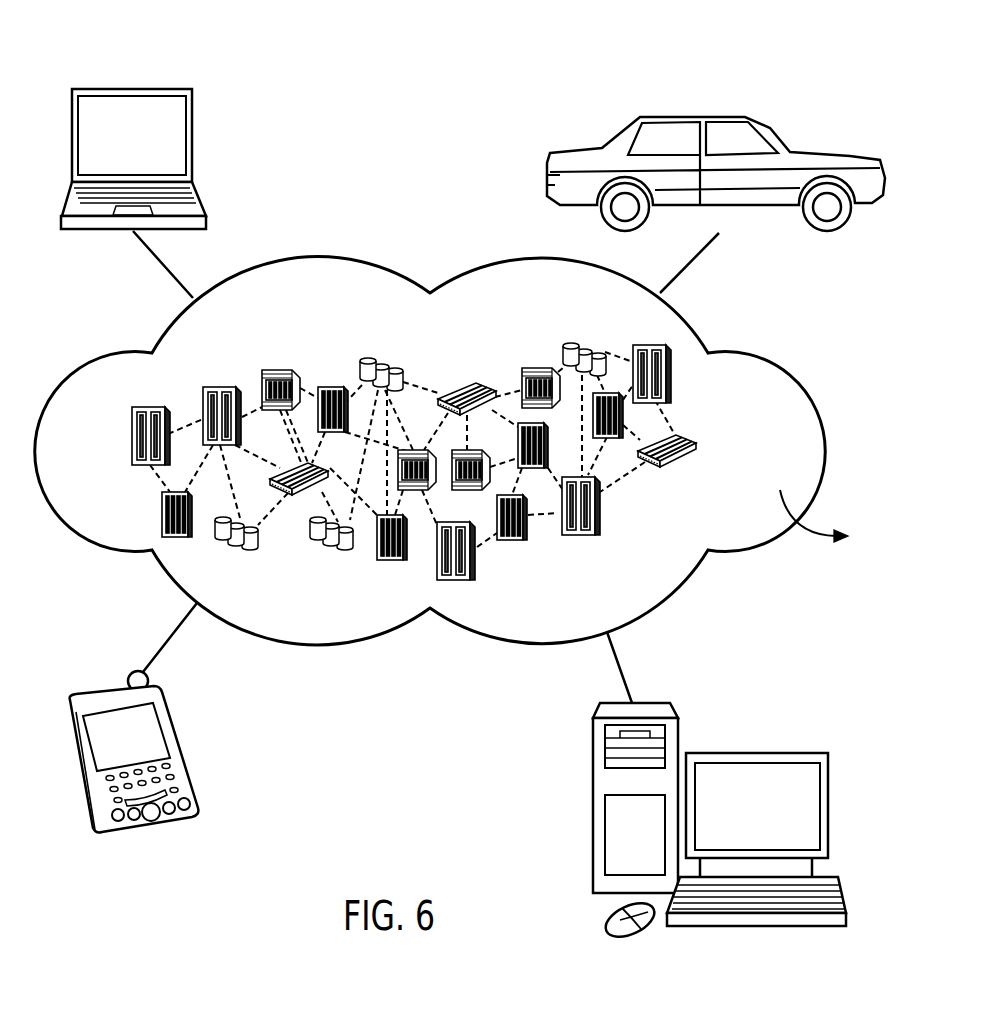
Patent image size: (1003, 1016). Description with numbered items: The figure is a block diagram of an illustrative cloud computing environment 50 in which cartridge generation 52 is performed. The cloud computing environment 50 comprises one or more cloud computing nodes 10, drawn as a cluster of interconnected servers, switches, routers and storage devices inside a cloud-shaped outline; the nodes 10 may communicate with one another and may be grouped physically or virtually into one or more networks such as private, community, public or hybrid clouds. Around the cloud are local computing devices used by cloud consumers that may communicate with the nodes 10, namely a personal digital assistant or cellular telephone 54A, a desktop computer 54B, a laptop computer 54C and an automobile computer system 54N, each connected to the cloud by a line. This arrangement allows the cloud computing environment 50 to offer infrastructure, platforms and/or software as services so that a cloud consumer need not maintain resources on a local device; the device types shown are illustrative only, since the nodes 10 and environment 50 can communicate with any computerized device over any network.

The cloud computing node 10 is at (705, 452).
The cloud computing environment 50 is at (770, 357).
The cartridge generation 52 is at (908, 505).
The personal digital assistant or cellular telephone 54A is at (112, 690).
The desktop computer 54B is at (760, 752).
The laptop computer 54C is at (131, 88).
The automobile computer system 54N is at (693, 117).